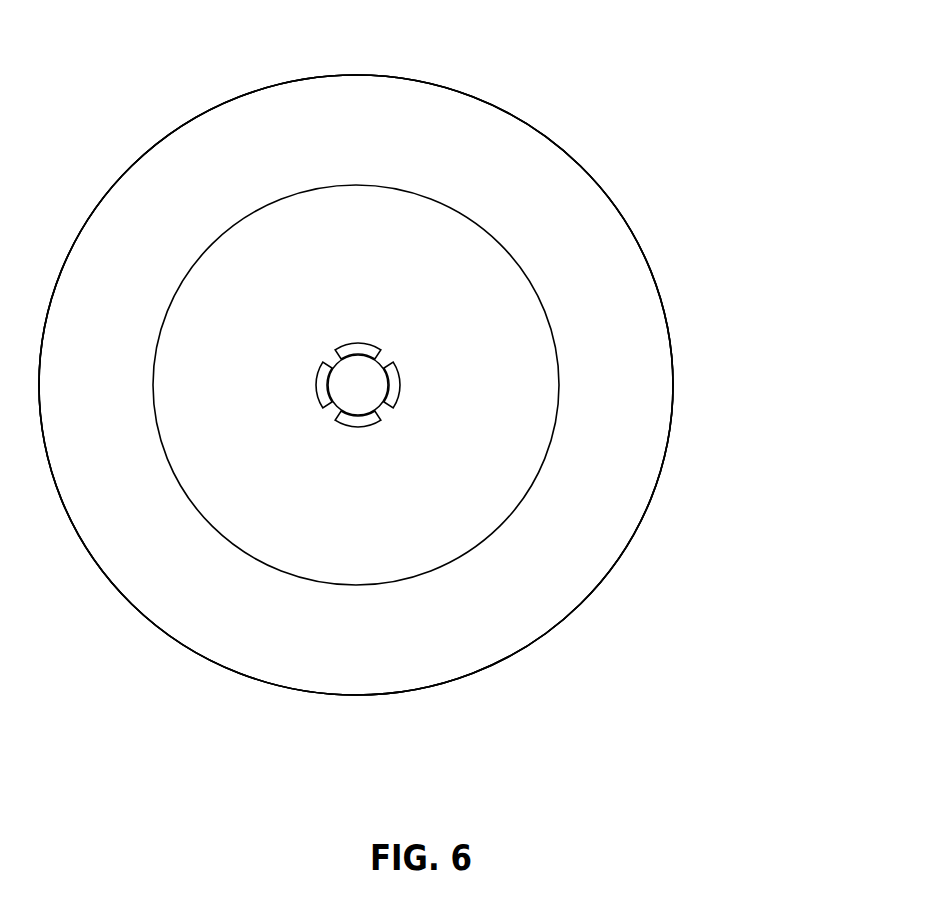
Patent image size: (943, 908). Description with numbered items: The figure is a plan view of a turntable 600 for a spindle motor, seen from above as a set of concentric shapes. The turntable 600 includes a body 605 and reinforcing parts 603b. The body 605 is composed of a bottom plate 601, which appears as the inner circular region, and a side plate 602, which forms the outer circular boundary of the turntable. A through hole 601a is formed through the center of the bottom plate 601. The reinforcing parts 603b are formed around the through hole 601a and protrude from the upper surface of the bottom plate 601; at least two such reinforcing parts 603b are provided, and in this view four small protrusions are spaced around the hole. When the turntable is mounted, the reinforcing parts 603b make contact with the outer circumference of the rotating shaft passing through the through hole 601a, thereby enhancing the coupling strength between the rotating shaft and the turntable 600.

The turntable 600 is at (628, 120).
The body 605 is at (672, 330).
The side plate 602 is at (648, 395).
The bottom plate 601 is at (527, 443).
The through hole 601a is at (347, 402).
The reinforcing parts 603b is at (357, 350).